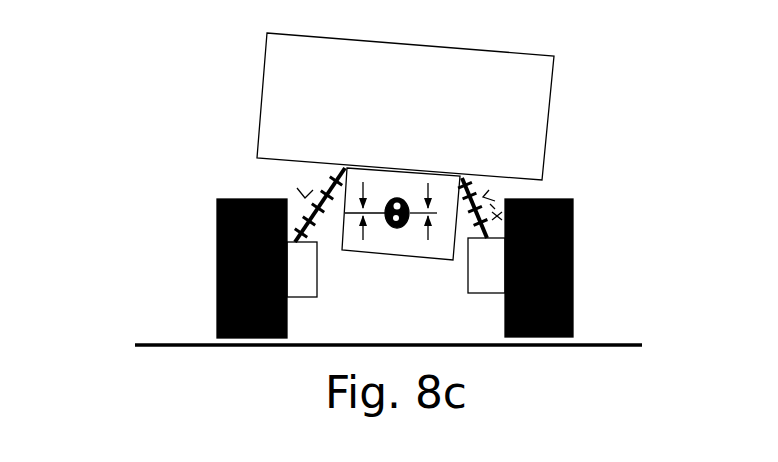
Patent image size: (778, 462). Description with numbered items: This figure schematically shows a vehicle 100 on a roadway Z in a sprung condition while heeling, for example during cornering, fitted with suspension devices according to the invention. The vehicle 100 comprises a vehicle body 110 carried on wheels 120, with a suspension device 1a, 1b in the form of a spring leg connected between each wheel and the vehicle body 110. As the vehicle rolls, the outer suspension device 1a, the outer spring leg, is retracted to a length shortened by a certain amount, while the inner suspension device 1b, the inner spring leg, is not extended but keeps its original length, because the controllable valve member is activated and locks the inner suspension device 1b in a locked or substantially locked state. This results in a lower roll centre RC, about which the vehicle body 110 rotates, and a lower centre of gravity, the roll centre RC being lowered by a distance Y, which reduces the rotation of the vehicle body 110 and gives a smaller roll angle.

The vehicle 100 is at (115, 305).
The vehicle body 110 is at (553, 98).
The wheels 120 is at (216, 238).
The outer suspension device 1a is at (484, 182).
The inner suspension device 1b is at (318, 178).
The roll centre RC is at (388, 198).
The lowering distance of roll centre Y is at (428, 240).
The roadway Z is at (593, 345).